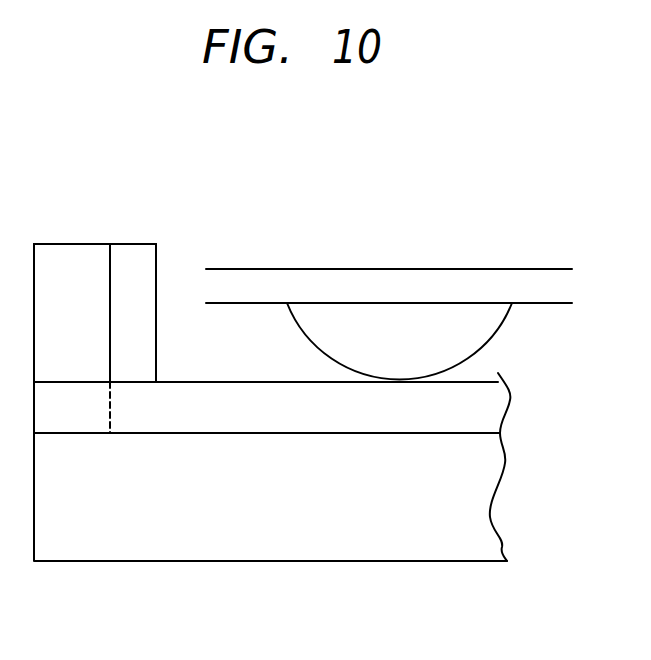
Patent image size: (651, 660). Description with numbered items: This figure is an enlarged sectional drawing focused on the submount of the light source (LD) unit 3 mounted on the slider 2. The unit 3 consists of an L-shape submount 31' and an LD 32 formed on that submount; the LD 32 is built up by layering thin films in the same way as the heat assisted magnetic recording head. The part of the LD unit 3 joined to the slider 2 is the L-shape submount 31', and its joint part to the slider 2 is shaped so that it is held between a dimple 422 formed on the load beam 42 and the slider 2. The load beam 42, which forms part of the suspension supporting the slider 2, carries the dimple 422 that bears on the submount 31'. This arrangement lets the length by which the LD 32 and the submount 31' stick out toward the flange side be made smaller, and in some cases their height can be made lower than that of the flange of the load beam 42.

The slider 2 is at (185, 527).
The light source (LD) unit 3 is at (40, 146).
The L-shape submount 31' is at (266, 386).
The LD (laser diode) 32 is at (60, 265).
The load beam 42 is at (443, 283).
The dimple 422 is at (368, 323).